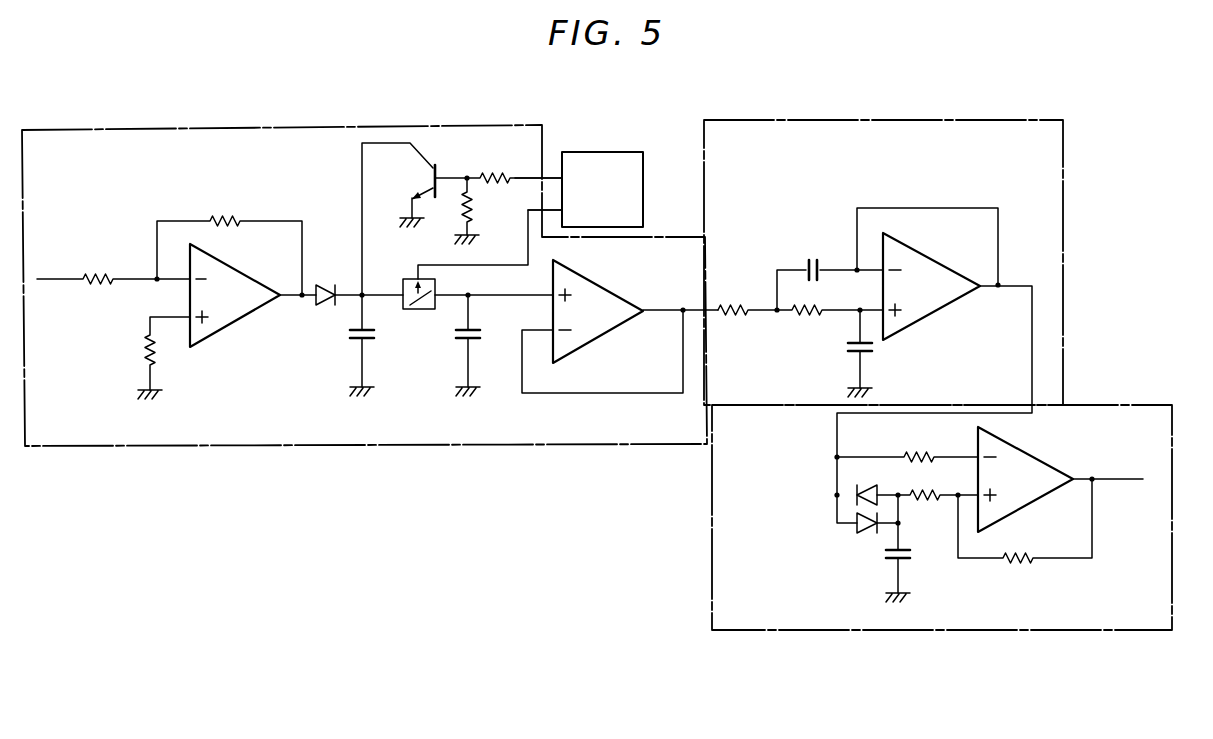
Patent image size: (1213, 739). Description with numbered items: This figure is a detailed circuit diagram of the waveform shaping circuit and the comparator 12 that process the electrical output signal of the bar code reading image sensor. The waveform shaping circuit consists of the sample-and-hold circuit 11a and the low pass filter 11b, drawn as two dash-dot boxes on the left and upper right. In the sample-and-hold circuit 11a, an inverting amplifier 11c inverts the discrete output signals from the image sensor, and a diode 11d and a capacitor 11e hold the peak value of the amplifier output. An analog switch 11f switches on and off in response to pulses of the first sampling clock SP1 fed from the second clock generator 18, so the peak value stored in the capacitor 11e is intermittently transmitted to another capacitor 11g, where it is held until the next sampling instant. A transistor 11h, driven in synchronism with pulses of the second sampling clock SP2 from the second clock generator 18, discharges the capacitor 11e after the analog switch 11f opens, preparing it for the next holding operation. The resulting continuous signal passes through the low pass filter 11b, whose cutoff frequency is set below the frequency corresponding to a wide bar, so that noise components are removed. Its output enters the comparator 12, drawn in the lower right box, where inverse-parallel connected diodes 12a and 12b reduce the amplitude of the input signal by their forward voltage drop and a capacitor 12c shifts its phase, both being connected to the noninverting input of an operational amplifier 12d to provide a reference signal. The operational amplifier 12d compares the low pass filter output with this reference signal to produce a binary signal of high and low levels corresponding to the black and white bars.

The sample-and-hold circuit 11a is at (305, 126).
The low pass filter 11b is at (915, 118).
The inverting amplifier 11c is at (237, 321).
The diode 11d is at (326, 305).
The capacitor 11e is at (373, 339).
The analog switch 11f is at (418, 311).
The capacitor 11g is at (474, 339).
The transistor 11h is at (430, 165).
The second clock generator 18 is at (597, 152).
The first sampling clock SP1 is at (527, 217).
The second sampling clock SP2 is at (553, 176).
The comparator 12 is at (1098, 404).
The diode 12a is at (858, 488).
The diode 12b is at (863, 531).
The capacitor 12c is at (907, 566).
The operational amplifier 12d is at (1040, 462).